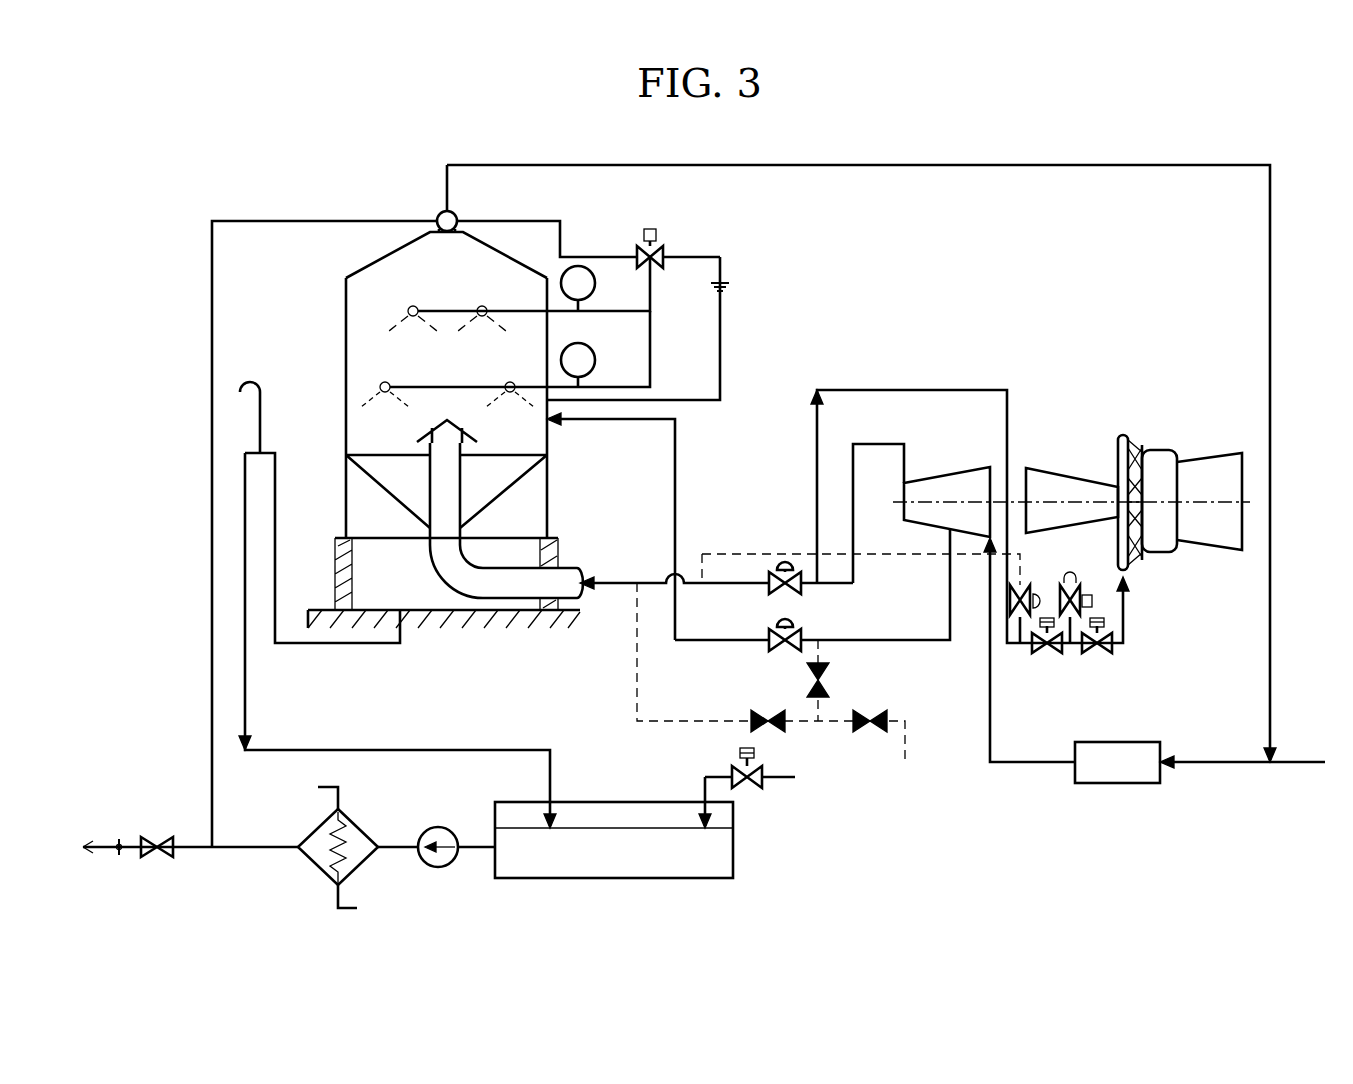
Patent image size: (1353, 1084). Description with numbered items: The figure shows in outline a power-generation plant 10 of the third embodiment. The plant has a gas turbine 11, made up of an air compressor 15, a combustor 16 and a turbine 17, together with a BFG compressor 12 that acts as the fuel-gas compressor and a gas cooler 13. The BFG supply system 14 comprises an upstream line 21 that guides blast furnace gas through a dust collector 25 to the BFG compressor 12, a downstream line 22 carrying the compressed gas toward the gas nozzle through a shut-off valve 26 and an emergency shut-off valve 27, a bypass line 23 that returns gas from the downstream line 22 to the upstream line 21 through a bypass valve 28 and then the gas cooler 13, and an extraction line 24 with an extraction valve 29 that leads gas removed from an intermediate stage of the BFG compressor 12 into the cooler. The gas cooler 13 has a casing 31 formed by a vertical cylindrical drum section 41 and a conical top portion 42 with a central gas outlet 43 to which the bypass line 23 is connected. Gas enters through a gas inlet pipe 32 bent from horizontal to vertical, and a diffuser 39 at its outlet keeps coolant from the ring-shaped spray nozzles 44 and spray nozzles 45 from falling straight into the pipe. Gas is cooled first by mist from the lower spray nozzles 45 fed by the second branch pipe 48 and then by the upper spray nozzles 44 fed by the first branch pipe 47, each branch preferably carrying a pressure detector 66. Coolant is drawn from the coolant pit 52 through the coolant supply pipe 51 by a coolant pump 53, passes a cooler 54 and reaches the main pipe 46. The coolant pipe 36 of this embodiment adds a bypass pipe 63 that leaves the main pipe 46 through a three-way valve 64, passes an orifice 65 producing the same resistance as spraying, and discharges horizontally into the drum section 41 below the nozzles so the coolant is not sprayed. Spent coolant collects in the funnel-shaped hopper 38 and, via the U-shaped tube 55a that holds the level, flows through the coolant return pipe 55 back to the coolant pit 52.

The power-generation plant 10 is at (382, 148).
The gas turbine 11 is at (1166, 432).
The BFG compressor 12 is at (970, 480).
The gas cooler 13 is at (298, 195).
The BFG supply system 14 is at (1232, 772).
The air compressor 15 is at (1055, 467).
The combustor 16 is at (1121, 432).
The turbine 17 is at (1228, 455).
The upstream line 21 is at (1028, 760).
The downstream line 22 is at (873, 389).
The bypass line 23 is at (812, 165).
The extraction line 24 is at (618, 421).
The dust collector 25 is at (1131, 742).
The shut-off valve 26 is at (1110, 655).
The emergency shut-off valve 27 is at (1068, 655).
The bypass valve 28 is at (801, 586).
The extraction valve 29 is at (768, 645).
The casing 31 is at (262, 243).
The gas inlet pipe 32 is at (470, 600).
The coolant pipe 36 is at (776, 285).
The hopper 38 is at (372, 478).
The diffuser 39 is at (463, 428).
The drum section 41 is at (346, 350).
The top portion 42 is at (346, 280).
The gas outlet 43 is at (437, 216).
The spray nozzles 44 is at (413, 306).
The spray nozzles 45 is at (386, 382).
The main pipe 46 is at (650, 288).
The first branch pipe 47 is at (650, 325).
The second branch pipe 48 is at (650, 372).
The coolant supply pipe 51 is at (212, 423).
The coolant pit 52 is at (580, 880).
The coolant pump 53 is at (438, 868).
The cooler 54 is at (318, 862).
The coolant return pipe 55 is at (250, 745).
The U-shaped tube 55a is at (372, 645).
The bypass pipe 63 is at (722, 303).
The three-way valve 64 is at (645, 236).
The orifice 65 is at (726, 282).
The pressure detectors 66 is at (597, 283).